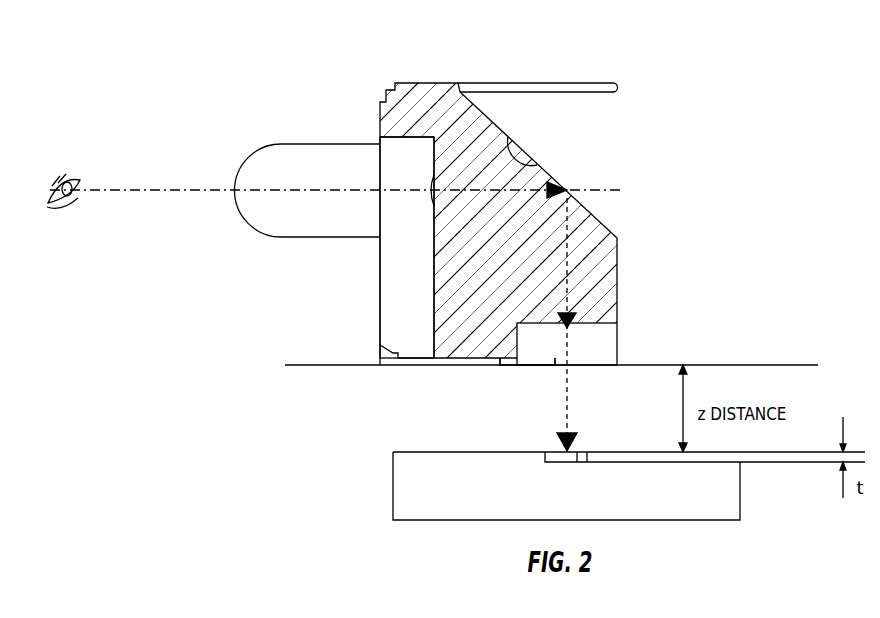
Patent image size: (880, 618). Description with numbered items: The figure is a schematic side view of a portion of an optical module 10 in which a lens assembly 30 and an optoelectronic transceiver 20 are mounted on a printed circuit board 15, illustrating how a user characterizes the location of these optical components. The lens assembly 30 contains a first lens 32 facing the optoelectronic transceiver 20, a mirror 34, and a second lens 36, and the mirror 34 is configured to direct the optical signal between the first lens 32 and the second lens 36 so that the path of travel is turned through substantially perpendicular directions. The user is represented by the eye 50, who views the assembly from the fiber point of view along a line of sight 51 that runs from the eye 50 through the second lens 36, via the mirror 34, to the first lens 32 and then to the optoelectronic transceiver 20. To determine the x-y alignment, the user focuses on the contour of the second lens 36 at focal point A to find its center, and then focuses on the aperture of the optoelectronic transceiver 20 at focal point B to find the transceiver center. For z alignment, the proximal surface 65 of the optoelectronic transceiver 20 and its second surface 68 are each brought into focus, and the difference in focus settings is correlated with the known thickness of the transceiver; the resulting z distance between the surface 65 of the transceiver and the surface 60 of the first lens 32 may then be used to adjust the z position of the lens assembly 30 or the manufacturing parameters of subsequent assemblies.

The optical module 10 is at (687, 103).
The printed circuit board 15 is at (393, 487).
The optoelectronic transceiver 20 is at (547, 452).
The lens assembly 30 is at (253, 70).
The first lens 32 is at (603, 333).
The mirror 34 is at (540, 165).
The second lens 36 is at (400, 274).
The eye 50 is at (63, 173).
The line of sight 51 is at (173, 192).
The surface of the first lens 60 is at (555, 365).
The proximal surface 65 is at (557, 448).
The second surface 68 is at (577, 462).
The focal point A is at (433, 208).
The focal point B is at (575, 448).